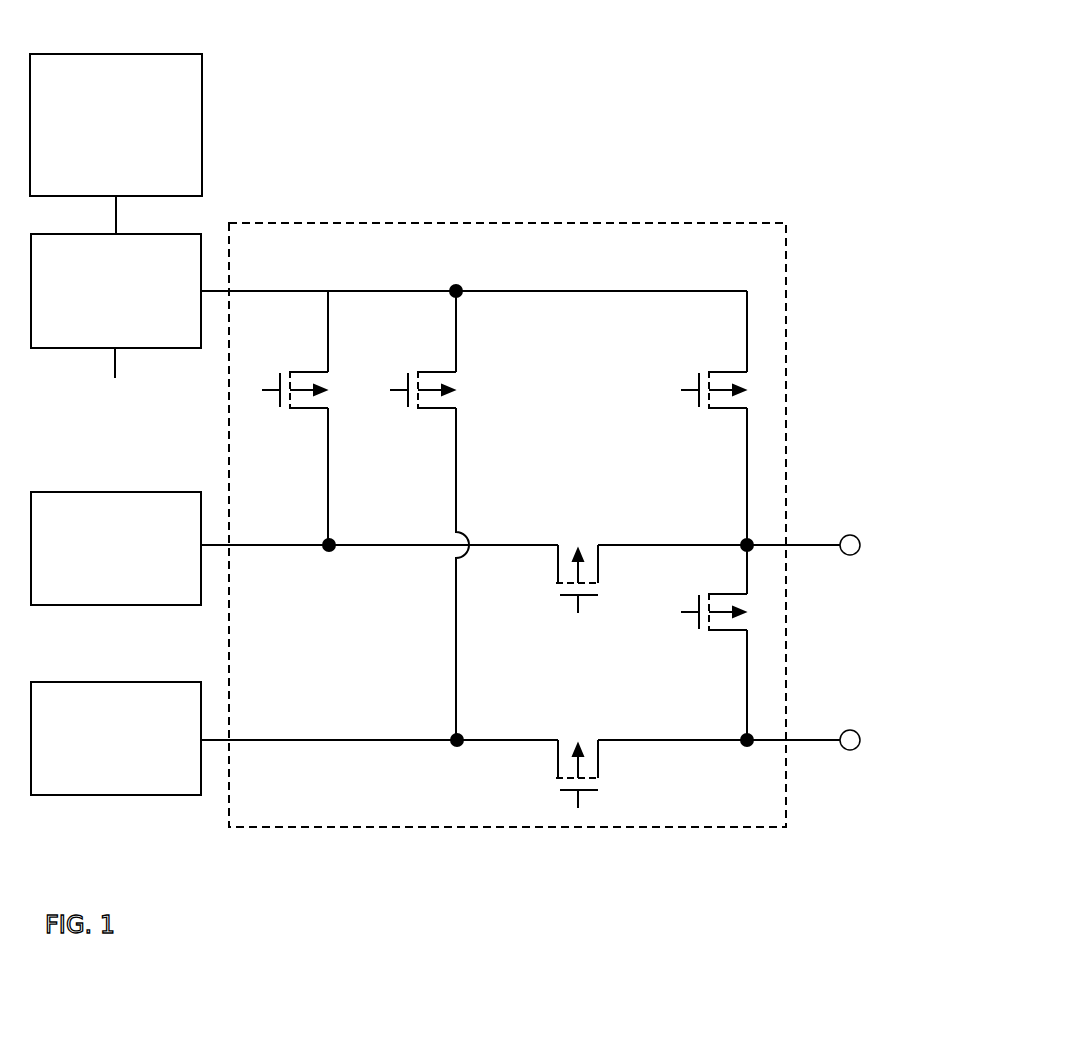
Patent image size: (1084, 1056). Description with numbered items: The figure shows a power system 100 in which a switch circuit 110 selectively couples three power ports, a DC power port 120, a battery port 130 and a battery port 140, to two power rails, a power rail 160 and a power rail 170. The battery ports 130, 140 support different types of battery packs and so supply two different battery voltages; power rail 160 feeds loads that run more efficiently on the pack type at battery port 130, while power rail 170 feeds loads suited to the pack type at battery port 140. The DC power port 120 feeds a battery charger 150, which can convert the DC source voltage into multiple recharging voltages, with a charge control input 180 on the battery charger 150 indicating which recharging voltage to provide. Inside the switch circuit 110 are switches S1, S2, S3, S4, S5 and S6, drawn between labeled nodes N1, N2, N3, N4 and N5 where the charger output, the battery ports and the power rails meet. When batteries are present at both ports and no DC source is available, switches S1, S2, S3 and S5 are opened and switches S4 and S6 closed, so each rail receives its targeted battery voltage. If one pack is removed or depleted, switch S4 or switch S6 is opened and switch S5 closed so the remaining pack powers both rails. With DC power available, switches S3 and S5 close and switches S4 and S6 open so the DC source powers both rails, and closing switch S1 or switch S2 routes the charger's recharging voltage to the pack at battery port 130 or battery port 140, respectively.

The power system 100 is at (383, 63).
The switch circuit 110 is at (440, 223).
The DC power port 120 is at (94, 182).
The battery port 130 is at (94, 589).
The battery port 140 is at (94, 780).
The battery charger 150 is at (94, 333).
The power rail 160 is at (858, 537).
The power rail 170 is at (858, 732).
The charge control input 180 is at (115, 372).
The switch S1 is at (295, 418).
The switch S2 is at (429, 515).
The switch S3 is at (714, 418).
The switch S4 is at (651, 579).
The switch S5 is at (714, 642).
The switch S6 is at (651, 774).
The node N1 is at (594, 275).
The node N2 is at (435, 560).
The node N3 is at (498, 755).
The node N4 is at (727, 529).
The node N5 is at (748, 755).